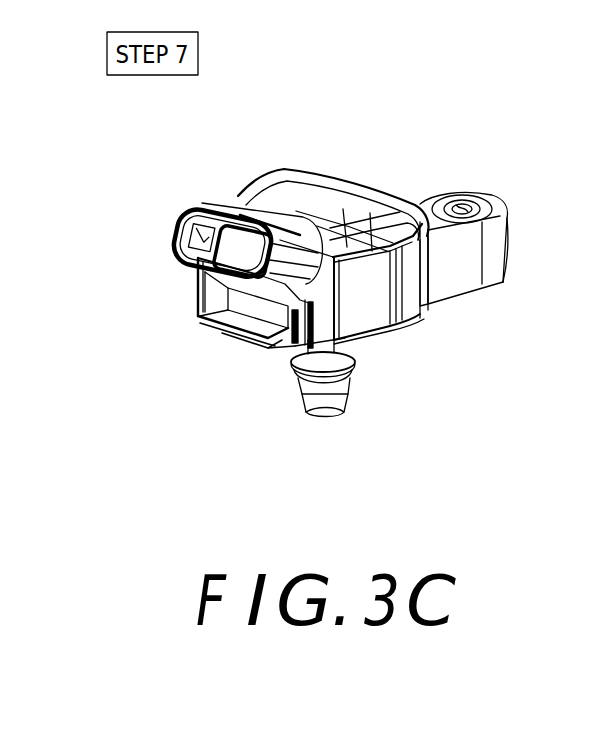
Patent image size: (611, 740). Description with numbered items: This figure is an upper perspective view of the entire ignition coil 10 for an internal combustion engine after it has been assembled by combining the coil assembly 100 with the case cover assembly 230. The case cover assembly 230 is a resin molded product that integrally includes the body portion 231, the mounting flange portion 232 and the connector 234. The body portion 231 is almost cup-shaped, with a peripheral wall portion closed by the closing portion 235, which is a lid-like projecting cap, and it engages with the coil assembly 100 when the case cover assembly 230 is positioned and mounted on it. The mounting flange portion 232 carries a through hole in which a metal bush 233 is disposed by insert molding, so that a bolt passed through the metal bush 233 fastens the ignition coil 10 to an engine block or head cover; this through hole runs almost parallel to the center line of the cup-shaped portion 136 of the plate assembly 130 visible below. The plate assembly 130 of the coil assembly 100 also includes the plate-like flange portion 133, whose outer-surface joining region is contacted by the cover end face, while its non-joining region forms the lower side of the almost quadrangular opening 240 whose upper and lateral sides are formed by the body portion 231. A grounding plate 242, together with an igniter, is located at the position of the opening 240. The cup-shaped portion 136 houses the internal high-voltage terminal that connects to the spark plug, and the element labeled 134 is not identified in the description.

The ignition coil 10 is at (212, 478).
The coil assembly 100 is at (282, 392).
The plate assembly 130 is at (398, 378).
The plate-like flange portion 133 is at (278, 352).
The flange 134 is at (380, 340).
The cup-shaped portion 136 is at (332, 412).
The case cover assembly 230 is at (396, 160).
The body portion 231 is at (416, 326).
The mounting flange portion 232 is at (505, 254).
The metal bush 233 is at (472, 196).
The connector 234 is at (206, 210).
The closing portion 235 is at (320, 173).
The opening 240 is at (188, 346).
The grounding plate 242 is at (236, 336).